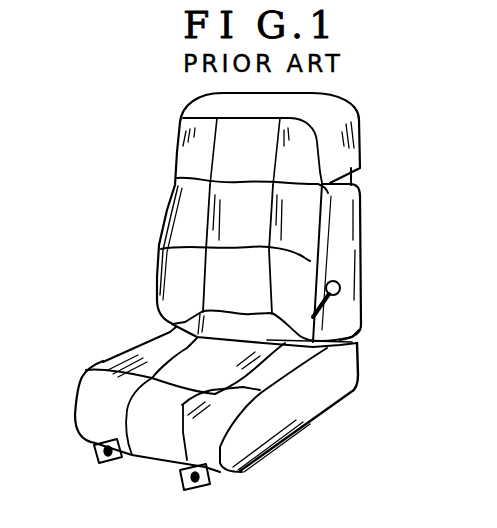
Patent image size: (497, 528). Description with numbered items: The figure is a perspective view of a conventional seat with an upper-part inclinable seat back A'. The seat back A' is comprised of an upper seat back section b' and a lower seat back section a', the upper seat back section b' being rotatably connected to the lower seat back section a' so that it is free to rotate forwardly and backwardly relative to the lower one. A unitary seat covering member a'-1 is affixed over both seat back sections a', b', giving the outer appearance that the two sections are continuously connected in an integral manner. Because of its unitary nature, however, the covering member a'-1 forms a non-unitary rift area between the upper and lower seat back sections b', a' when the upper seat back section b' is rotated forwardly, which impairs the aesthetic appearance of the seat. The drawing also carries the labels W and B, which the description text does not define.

The upper seat back section b' is at (251, 139).
The unitary seat covering member a'-1 is at (232, 246).
The seat back A' is at (209, 266).
The lower seat back section a' is at (144, 243).
The joint between headrest and seat back W is at (361, 179).
The seat cushion B is at (122, 355).